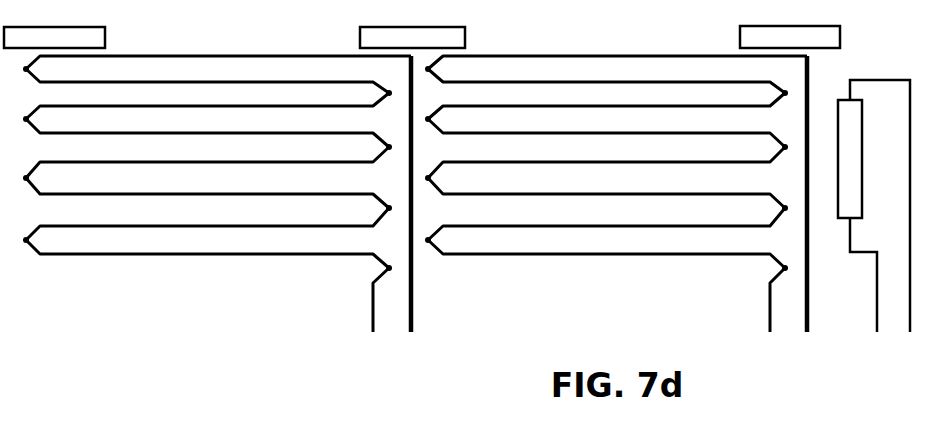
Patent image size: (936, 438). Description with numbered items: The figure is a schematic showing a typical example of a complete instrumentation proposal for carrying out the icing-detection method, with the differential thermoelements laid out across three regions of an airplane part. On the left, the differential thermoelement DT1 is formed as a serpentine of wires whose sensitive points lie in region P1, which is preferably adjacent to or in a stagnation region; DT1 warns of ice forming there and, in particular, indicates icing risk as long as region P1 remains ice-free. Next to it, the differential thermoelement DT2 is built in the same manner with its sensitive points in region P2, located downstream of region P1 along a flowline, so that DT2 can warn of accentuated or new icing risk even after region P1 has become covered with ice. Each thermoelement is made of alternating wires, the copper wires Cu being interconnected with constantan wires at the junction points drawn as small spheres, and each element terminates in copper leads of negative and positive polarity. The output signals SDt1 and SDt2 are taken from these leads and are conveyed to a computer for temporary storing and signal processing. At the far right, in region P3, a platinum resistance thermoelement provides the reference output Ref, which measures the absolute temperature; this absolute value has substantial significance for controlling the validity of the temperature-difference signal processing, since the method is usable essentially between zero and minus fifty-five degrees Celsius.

The region P1 is at (54, 37).
The region P2 is at (412, 37).
The region P3 is at (790, 37).
The differential thermoelement Dt1 DT1 is at (217, 194).
The differential thermoelement Dt2 DT2 is at (616, 194).
The output signal SDt1 is at (391, 213).
The output signal SDt2 is at (787, 213).
The copper wire Cu is at (589, 303).
The reference temperature measurement Ref is at (877, 225).